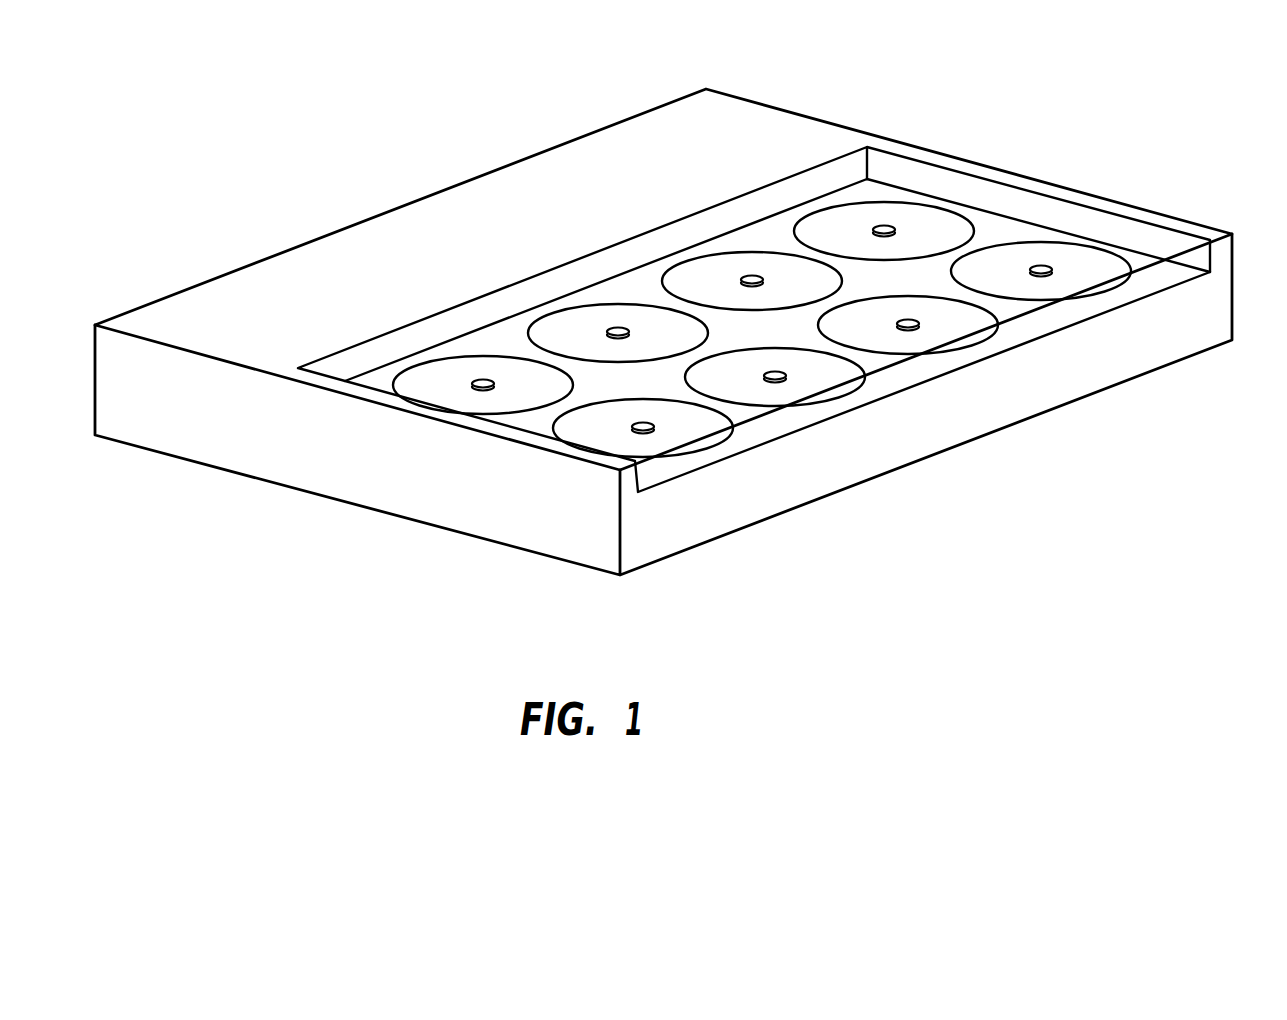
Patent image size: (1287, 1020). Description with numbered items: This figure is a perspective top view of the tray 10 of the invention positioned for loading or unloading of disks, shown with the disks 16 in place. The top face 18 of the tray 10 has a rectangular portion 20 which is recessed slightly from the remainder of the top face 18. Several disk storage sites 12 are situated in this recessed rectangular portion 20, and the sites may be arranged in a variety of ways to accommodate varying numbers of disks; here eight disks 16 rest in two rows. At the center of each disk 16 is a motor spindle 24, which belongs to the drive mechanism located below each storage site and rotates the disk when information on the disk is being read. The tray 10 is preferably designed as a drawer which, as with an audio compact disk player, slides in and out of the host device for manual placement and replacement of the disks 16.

The tray 10 is at (914, 97).
The disk storage sites 12 is at (990, 231).
The disks 16 is at (568, 434).
The top face 18 is at (222, 282).
The rectangular portion 20 is at (630, 283).
The motor spindle 24 is at (777, 374).